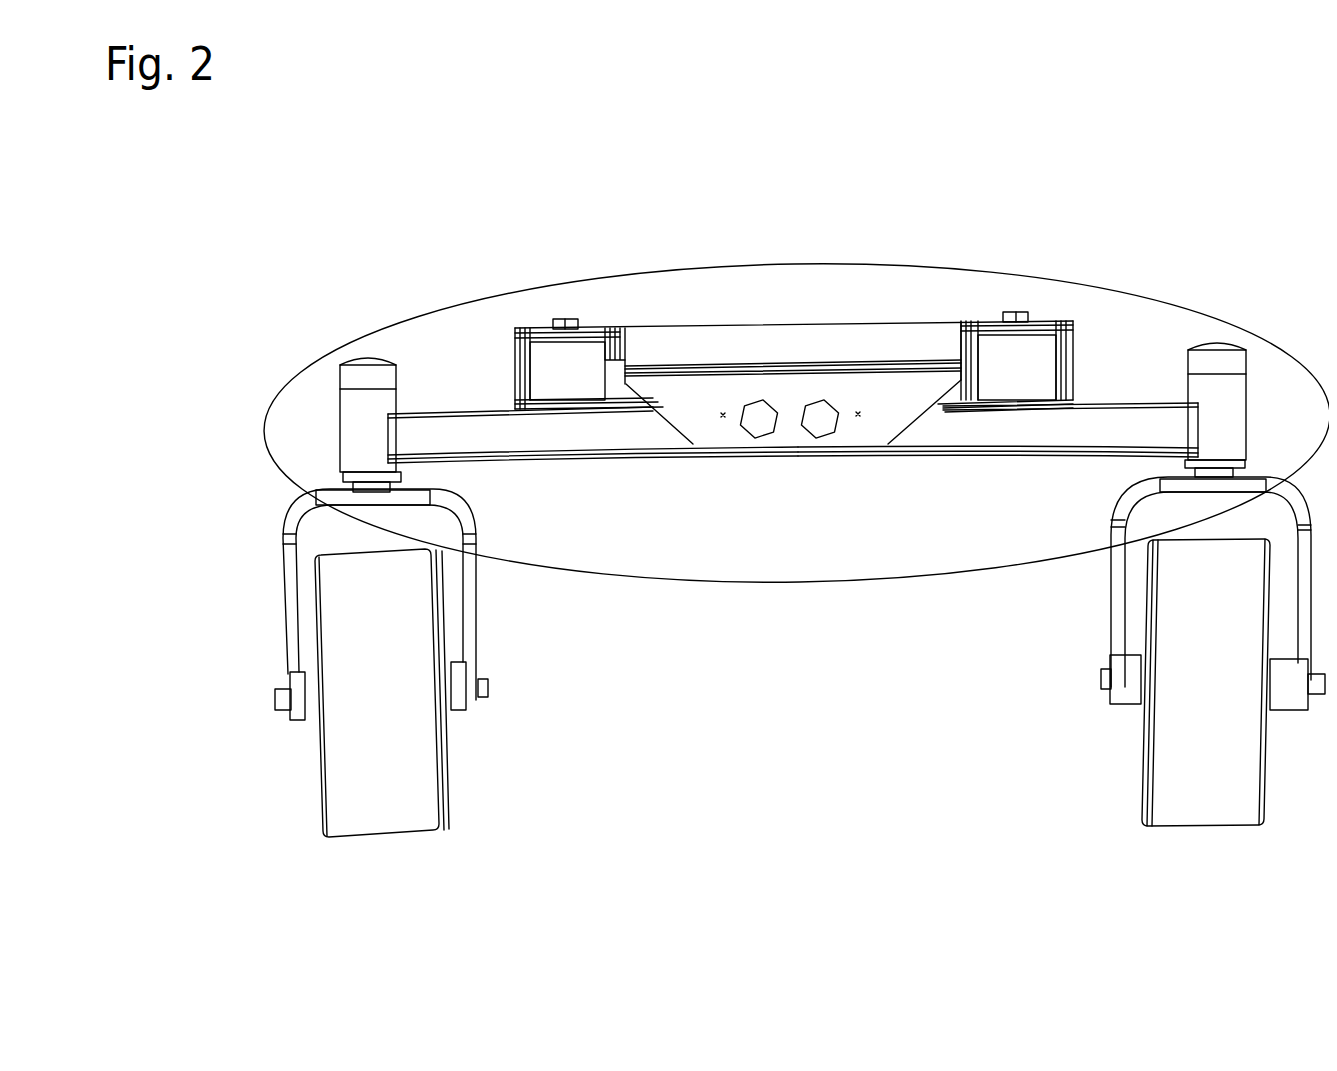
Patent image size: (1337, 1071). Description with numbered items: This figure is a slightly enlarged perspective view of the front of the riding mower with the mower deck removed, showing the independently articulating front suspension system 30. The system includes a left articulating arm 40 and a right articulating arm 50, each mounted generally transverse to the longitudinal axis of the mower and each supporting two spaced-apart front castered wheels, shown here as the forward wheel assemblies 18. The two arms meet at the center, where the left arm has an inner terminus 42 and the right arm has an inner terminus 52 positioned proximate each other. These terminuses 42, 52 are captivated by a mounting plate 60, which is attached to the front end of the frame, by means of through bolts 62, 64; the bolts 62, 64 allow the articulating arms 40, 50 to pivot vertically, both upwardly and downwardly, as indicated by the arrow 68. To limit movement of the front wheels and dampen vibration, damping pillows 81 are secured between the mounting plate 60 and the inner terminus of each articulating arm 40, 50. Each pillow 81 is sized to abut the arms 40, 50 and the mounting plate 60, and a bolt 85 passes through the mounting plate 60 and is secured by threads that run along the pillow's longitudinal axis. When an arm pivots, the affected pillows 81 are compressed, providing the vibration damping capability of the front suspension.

The forward wheel assembly 18 is at (367, 689).
The articulating suspension system 30 is at (716, 575).
The left articulating arm 40 is at (463, 399).
The inner terminus 42 is at (685, 436).
The right articulating arm 50 is at (1110, 389).
The inner terminus 52 is at (880, 436).
The mounting plate 60 is at (767, 342).
The through bolt 62 is at (738, 436).
The through bolt 64 is at (833, 436).
The arrow 68 is at (238, 317).
The damping pillow 81 is at (557, 366).
The bolt 85 is at (563, 314).